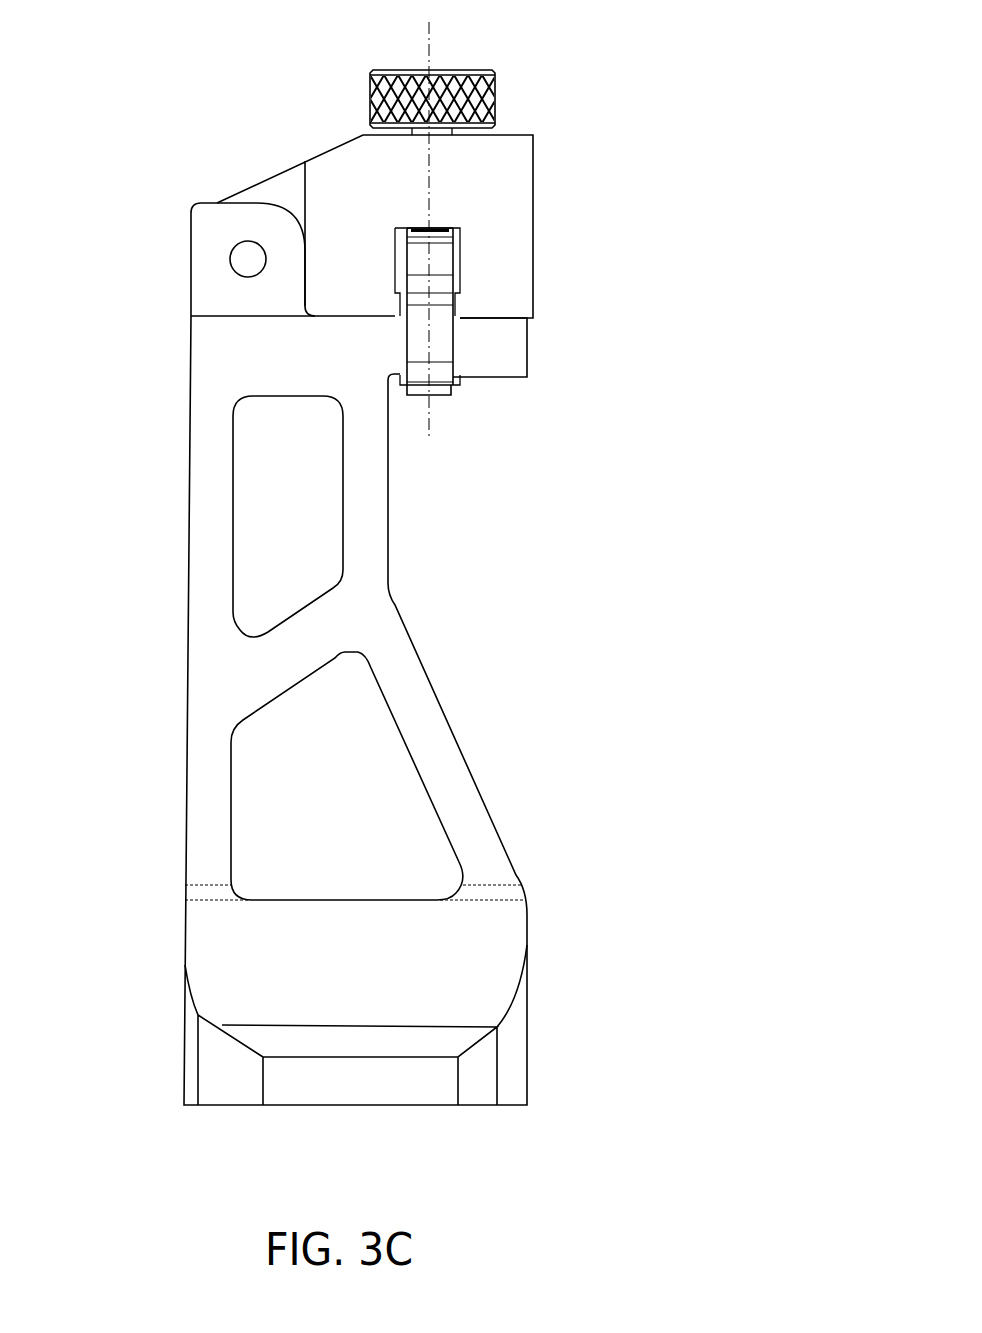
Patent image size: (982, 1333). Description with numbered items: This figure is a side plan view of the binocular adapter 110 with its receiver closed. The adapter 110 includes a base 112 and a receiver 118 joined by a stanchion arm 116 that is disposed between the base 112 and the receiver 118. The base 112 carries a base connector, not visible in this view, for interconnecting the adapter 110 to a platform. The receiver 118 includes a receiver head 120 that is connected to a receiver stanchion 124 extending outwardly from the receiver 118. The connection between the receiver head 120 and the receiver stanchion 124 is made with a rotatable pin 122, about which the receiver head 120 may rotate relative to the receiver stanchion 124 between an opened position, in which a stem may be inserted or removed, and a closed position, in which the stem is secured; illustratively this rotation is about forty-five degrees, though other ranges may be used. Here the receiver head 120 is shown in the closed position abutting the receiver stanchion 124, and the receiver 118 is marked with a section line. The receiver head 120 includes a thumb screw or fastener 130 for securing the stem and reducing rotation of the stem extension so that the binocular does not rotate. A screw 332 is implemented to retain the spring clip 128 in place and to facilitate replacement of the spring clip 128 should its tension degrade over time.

The binocular adapter 110 is at (664, 30).
The base 112 is at (528, 1007).
The stanchion arm 116 is at (186, 689).
The receiver 118 is at (200, 200).
The receiver head 120 is at (535, 160).
The rotatable pin 122 is at (230, 265).
The receiver stanchion 124 is at (528, 350).
The spring clip 128 is at (445, 225).
The thumb screw or fastener 130 is at (490, 68).
The screw 332 is at (452, 393).